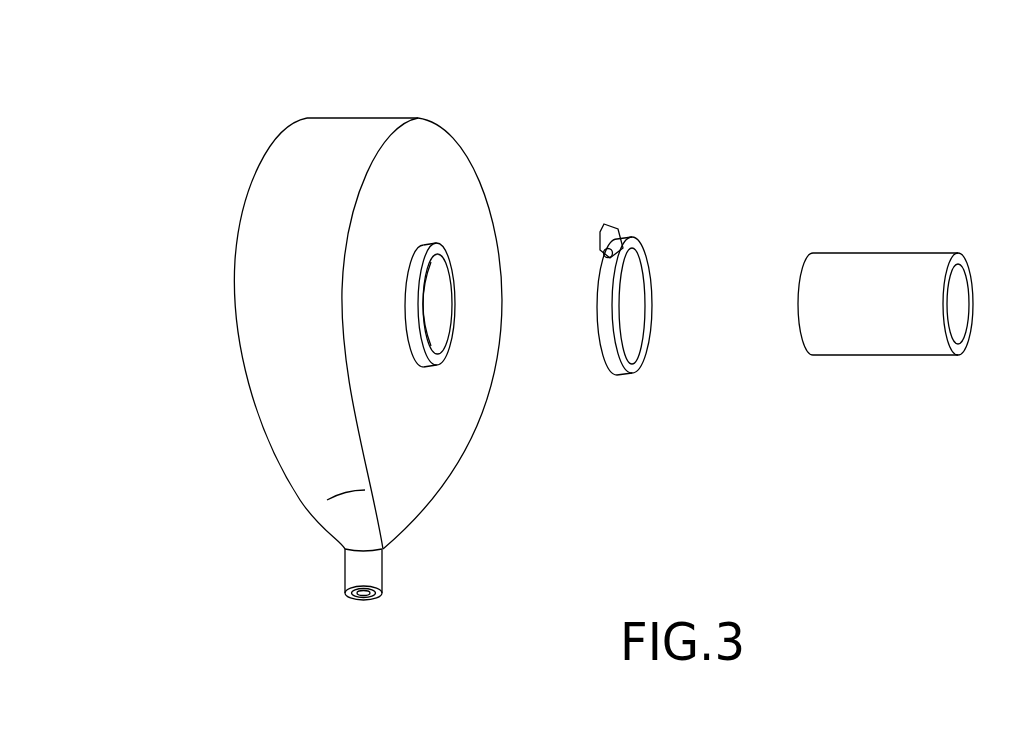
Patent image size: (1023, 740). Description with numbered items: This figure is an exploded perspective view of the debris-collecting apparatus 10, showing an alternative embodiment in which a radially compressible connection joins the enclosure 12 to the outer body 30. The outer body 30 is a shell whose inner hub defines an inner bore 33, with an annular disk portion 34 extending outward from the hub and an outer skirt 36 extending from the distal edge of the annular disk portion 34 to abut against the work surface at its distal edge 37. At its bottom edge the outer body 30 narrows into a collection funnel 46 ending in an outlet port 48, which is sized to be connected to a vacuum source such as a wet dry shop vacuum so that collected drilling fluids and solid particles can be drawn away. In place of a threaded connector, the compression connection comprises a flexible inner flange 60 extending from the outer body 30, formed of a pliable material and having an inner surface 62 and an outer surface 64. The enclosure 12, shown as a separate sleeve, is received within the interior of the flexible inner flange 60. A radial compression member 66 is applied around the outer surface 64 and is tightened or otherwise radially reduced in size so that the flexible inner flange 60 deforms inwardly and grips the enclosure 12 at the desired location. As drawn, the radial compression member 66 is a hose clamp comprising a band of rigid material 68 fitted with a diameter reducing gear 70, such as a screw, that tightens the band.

The apparatus 10 is at (713, 120).
The enclosure 12 is at (897, 237).
The outer body 30 is at (370, 107).
The inner bore 33 is at (443, 264).
The annular disk portion 34 is at (442, 180).
The outer skirt 36 is at (312, 153).
The distal edge 37 is at (248, 195).
The collection funnel 46 is at (407, 503).
The outlet port 48 is at (370, 600).
The flexible inner flange 60 is at (445, 245).
The inner surface 62 is at (442, 328).
The outer surface 64 is at (418, 355).
The radial compression member 66 is at (636, 228).
The band of rigid material 68 is at (652, 328).
The diameter reducing gear 70 is at (607, 225).